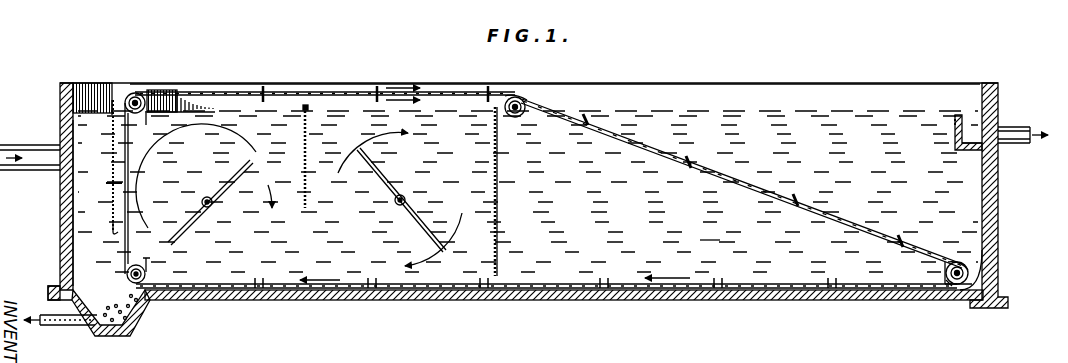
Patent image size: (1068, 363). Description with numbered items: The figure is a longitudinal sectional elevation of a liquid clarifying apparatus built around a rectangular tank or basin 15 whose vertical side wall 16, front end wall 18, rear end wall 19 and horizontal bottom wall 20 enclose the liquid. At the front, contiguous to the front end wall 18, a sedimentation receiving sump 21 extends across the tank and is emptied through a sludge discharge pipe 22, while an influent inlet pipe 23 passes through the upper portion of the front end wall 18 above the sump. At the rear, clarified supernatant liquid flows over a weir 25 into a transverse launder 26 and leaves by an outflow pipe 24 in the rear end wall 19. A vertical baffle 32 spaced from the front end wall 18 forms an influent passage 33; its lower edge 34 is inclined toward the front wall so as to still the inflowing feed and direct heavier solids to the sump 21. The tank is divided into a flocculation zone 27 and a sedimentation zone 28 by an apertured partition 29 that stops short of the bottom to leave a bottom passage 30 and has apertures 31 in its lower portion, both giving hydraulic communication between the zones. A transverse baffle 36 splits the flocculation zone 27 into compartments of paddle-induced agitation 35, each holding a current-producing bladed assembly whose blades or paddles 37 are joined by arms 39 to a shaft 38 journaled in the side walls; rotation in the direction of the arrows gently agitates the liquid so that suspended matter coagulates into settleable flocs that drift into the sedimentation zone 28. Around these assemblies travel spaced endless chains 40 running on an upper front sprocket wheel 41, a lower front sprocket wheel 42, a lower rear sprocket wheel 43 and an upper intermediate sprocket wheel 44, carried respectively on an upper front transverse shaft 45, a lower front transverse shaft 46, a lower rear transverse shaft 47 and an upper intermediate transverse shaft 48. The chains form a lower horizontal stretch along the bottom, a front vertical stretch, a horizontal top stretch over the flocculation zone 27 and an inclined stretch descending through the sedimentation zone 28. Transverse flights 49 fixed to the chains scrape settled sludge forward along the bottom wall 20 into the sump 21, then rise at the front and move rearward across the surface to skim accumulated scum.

The tank or basin 15 is at (58, 90).
The vertical side wall 16 is at (752, 72).
The front end wall 18 is at (60, 228).
The rear end wall 19 is at (998, 212).
The bottom wall 20 is at (420, 297).
The sedimentation receiving sump 21 is at (138, 312).
The sludge discharge pipe 22 is at (66, 325).
The influent inlet pipe 23 is at (22, 150).
The outflow pipe 24 is at (1012, 127).
The weir 25 is at (955, 114).
The transverse launder 26 is at (972, 130).
The flocculation zone 27 is at (310, 237).
The sedimentation zone 28 is at (723, 226).
The apertured partition 29 is at (497, 186).
The bottom passage 30 is at (497, 276).
The apertures 31 is at (497, 205).
The vertical baffle 32 is at (115, 100).
The influent passage 33 is at (92, 200).
The lower edge of baffle 34 is at (112, 231).
The compartments of paddle-induced agitation 35 is at (299, 195).
The transverse baffle 36 is at (310, 106).
The blades or paddles 37 is at (170, 236).
The shaft 38 is at (212, 210).
The arms 39 is at (299, 195).
The endless belts or chains 40 is at (450, 91).
The upper front sprocket wheel 41 is at (152, 106).
The lower front sprocket wheel 42 is at (146, 266).
The lower rear sprocket wheel 43 is at (948, 278).
The upper intermediate sprocket wheel 44 is at (540, 104).
The upper front transverse shaft 45 is at (136, 94).
The lower front transverse shaft 46 is at (126, 273).
The lower rear transverse shaft 47 is at (968, 268).
The upper intermediate transverse shaft 48 is at (532, 98).
The transverse blades or flights 49 is at (266, 88).